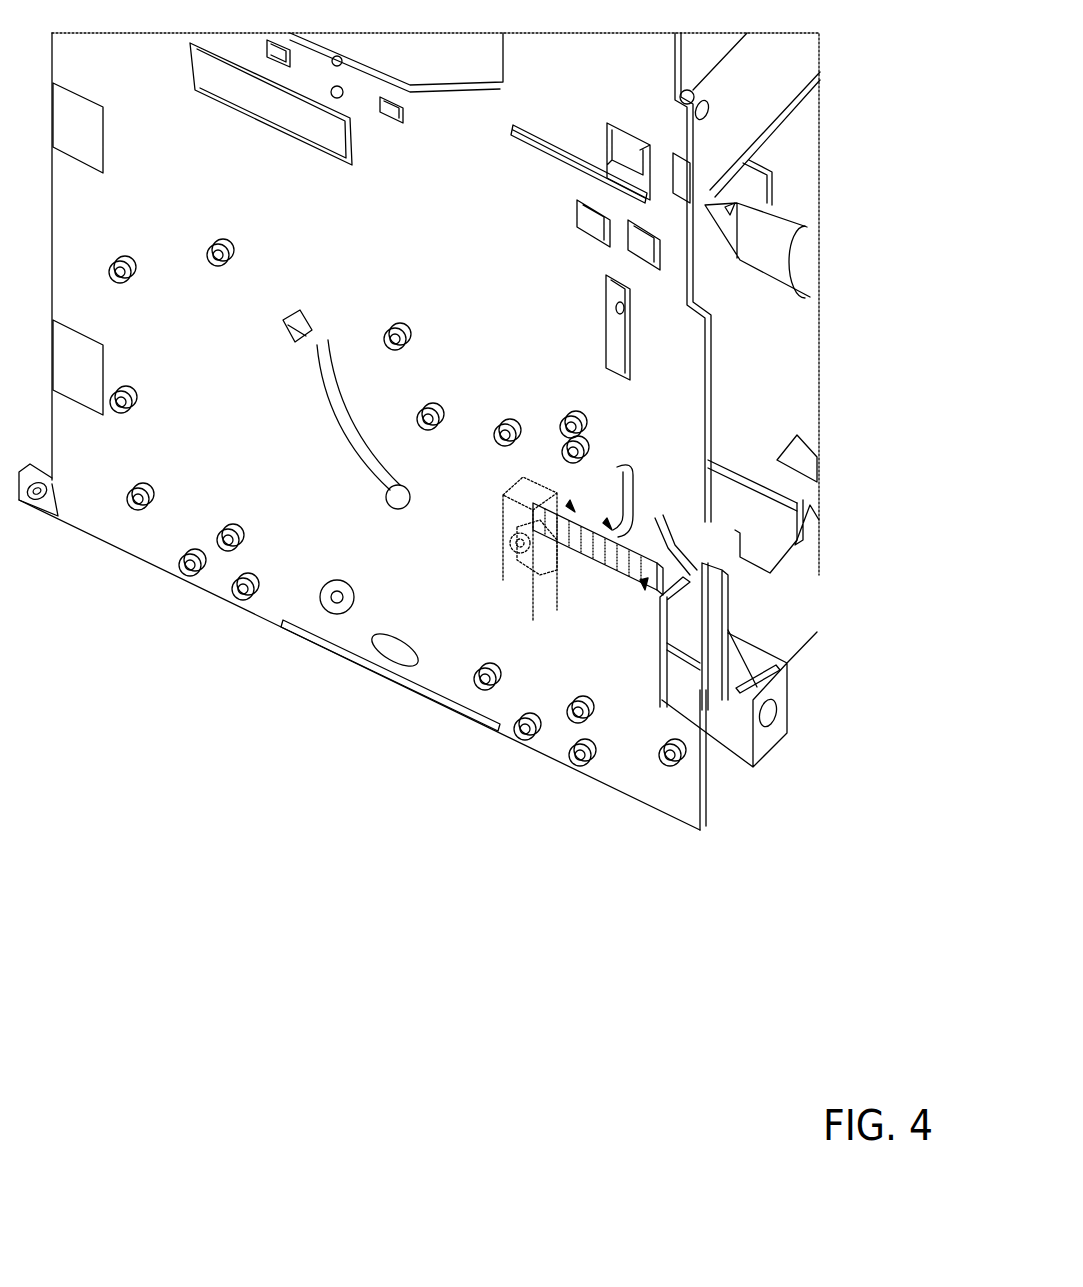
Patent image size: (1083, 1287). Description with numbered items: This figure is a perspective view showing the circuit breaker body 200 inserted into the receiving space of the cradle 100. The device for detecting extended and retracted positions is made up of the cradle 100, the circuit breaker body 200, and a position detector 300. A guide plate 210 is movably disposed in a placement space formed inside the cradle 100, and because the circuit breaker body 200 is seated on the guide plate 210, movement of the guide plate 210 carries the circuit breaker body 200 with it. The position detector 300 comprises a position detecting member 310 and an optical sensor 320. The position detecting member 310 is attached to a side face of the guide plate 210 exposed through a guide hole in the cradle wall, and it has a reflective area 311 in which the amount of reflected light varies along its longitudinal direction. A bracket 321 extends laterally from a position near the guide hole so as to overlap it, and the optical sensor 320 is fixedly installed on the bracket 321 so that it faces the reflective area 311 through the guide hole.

The cradle 100 is at (670, 342).
The circuit breaker body 200 is at (773, 472).
The guide plate 210 is at (683, 617).
The position detector 300 is at (557, 674).
The position detecting member 310 is at (572, 510).
The reflective area 311 is at (643, 590).
The optical sensor 320 is at (540, 530).
The bracket 321 is at (520, 553).